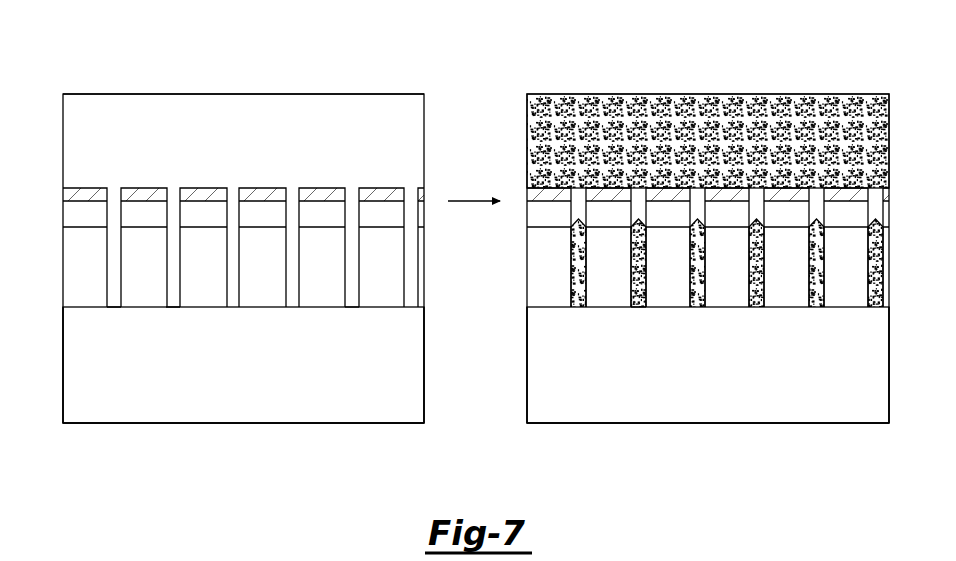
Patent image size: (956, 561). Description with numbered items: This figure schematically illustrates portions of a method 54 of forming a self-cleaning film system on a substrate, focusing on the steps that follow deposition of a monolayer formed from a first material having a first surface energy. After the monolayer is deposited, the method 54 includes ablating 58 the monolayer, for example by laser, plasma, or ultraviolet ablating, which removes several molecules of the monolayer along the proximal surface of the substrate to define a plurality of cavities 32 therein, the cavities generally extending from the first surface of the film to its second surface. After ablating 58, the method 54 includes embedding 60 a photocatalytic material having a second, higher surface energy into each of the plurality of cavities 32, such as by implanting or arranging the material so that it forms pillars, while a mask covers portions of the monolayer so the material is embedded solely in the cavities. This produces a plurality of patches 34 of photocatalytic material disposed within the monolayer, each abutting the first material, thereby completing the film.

The plurality of cavities 32 is at (353, 186).
The plurality of patches 34 is at (815, 252).
The method 54 is at (143, 52).
The ablating 58 is at (205, 453).
The embedding 60 is at (668, 453).